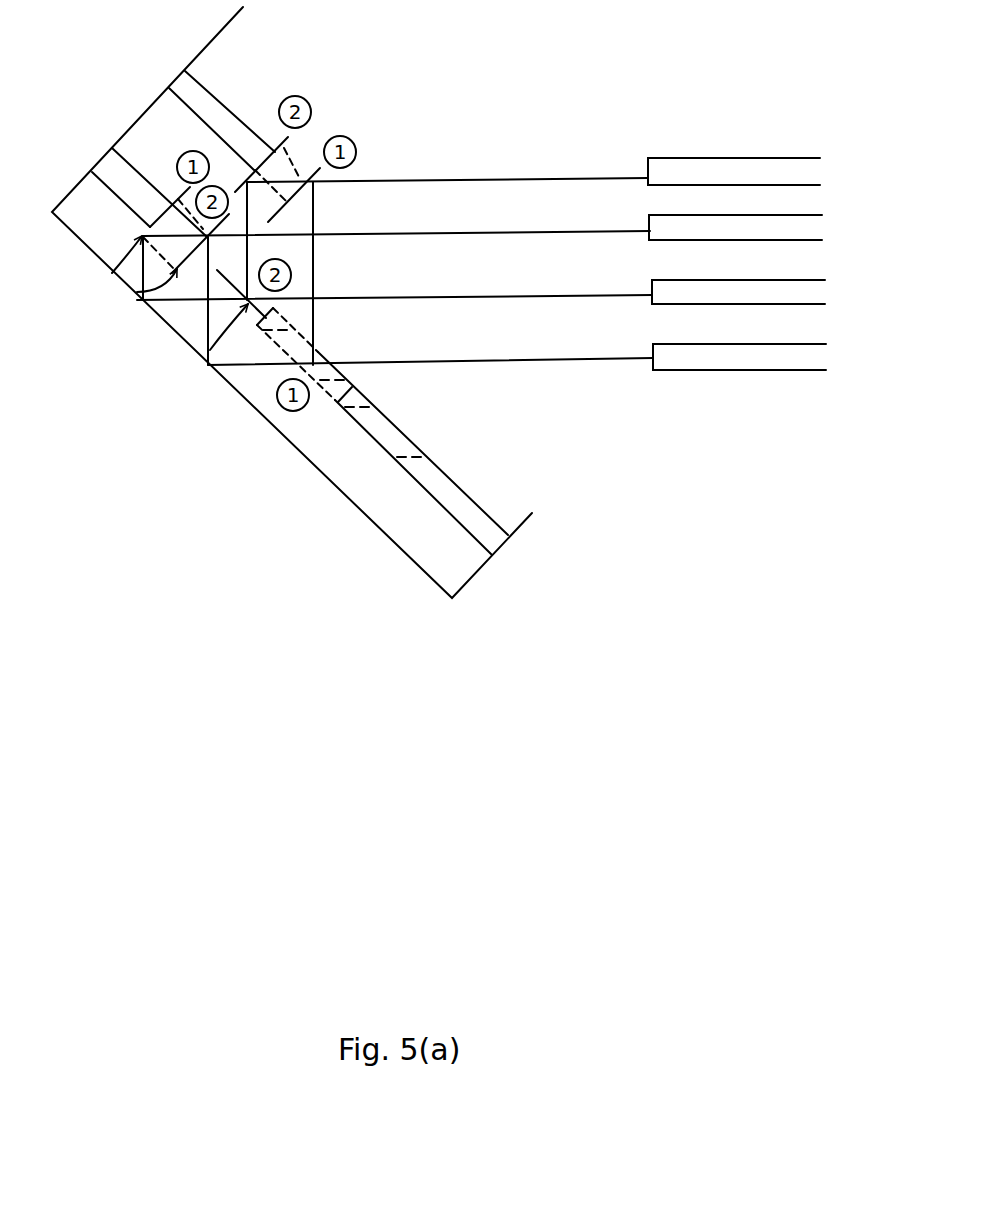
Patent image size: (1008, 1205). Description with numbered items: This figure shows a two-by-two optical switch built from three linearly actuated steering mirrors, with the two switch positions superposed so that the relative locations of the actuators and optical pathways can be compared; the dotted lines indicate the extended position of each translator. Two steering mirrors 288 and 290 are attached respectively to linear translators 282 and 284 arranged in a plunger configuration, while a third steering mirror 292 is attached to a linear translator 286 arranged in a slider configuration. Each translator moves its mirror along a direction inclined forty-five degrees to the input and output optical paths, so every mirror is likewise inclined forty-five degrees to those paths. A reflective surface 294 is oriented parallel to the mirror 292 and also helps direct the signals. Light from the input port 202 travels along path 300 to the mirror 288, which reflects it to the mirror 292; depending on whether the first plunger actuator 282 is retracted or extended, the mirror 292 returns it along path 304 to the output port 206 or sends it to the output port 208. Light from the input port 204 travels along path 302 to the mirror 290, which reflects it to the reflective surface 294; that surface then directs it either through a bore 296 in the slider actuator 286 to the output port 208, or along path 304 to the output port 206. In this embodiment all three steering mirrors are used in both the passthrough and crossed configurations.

The input port 202 is at (761, 171).
The input port 204 is at (762, 228).
The output port 206 is at (766, 296).
The output port 208 is at (766, 358).
The first plunger actuator 282 is at (222, 116).
The second plunger actuator 284 is at (149, 204).
The slider actuator 286 is at (397, 442).
The steering mirror 288 is at (318, 167).
The steering mirror 290 is at (138, 292).
The steering mirror 292 is at (306, 363).
The reflective surface 294 is at (304, 459).
The bore 296 is at (321, 352).
The path 300 is at (545, 162).
The path 302 is at (547, 215).
The path 304 is at (552, 280).